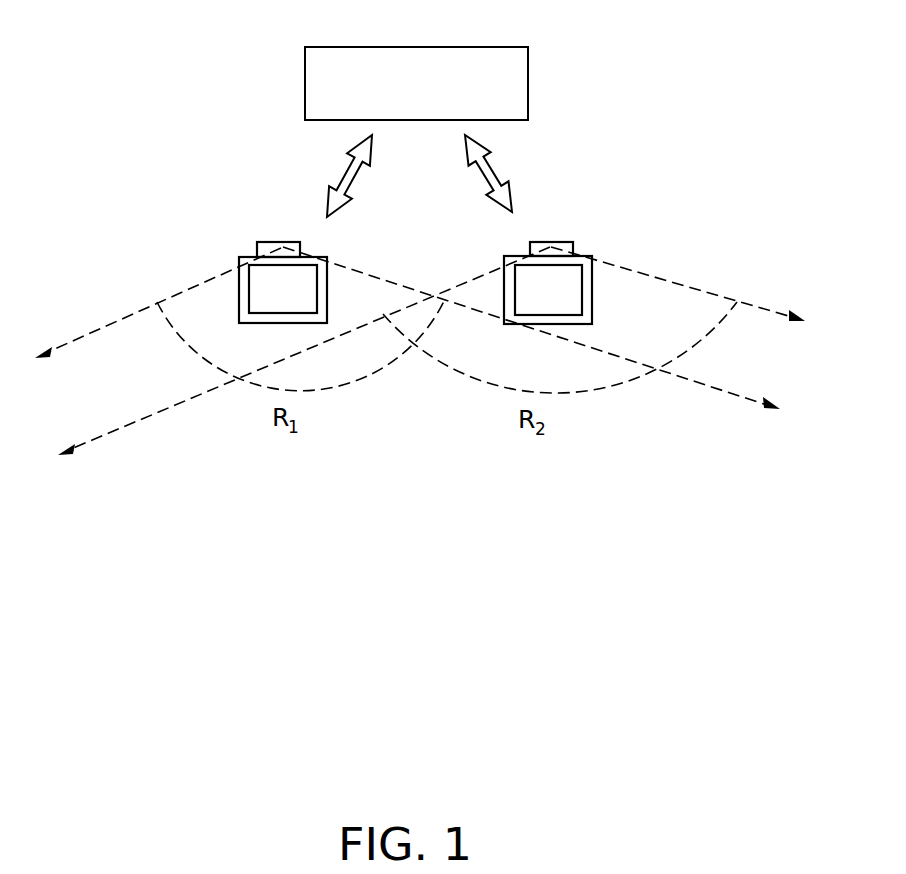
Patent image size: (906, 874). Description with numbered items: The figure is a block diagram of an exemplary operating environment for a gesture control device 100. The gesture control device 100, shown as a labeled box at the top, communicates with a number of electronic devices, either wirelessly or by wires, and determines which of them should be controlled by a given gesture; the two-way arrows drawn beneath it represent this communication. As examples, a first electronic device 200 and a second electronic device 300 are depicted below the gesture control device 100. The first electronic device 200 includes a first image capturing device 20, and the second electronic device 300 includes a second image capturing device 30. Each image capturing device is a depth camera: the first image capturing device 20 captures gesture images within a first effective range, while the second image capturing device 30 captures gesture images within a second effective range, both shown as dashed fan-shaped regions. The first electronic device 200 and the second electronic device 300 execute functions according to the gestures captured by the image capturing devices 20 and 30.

The gesture control device 100 is at (410, 46).
The first image capturing device 20 is at (273, 243).
The first electronic device 200 is at (217, 264).
The second image capturing device 30 is at (547, 243).
The second electronic device 300 is at (600, 268).